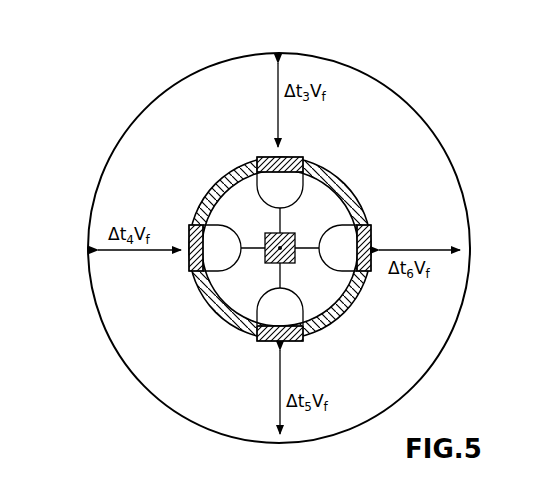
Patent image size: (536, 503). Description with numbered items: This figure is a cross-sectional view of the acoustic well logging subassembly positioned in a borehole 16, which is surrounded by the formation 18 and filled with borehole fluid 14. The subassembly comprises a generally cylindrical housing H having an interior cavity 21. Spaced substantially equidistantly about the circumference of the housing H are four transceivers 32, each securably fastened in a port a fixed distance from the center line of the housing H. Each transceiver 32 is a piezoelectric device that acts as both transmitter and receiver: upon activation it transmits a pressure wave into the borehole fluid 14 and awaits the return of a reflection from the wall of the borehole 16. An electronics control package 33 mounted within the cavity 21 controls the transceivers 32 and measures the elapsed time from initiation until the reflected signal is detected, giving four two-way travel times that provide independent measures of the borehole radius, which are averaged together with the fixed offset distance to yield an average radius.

The borehole fluid 14 is at (400, 153).
The borehole 16 is at (386, 86).
The formation 18 is at (97, 91).
The interior cavity 21 is at (262, 225).
The transceivers 32 is at (296, 156).
The electronics control package 33 is at (288, 233).
The housing H is at (222, 190).